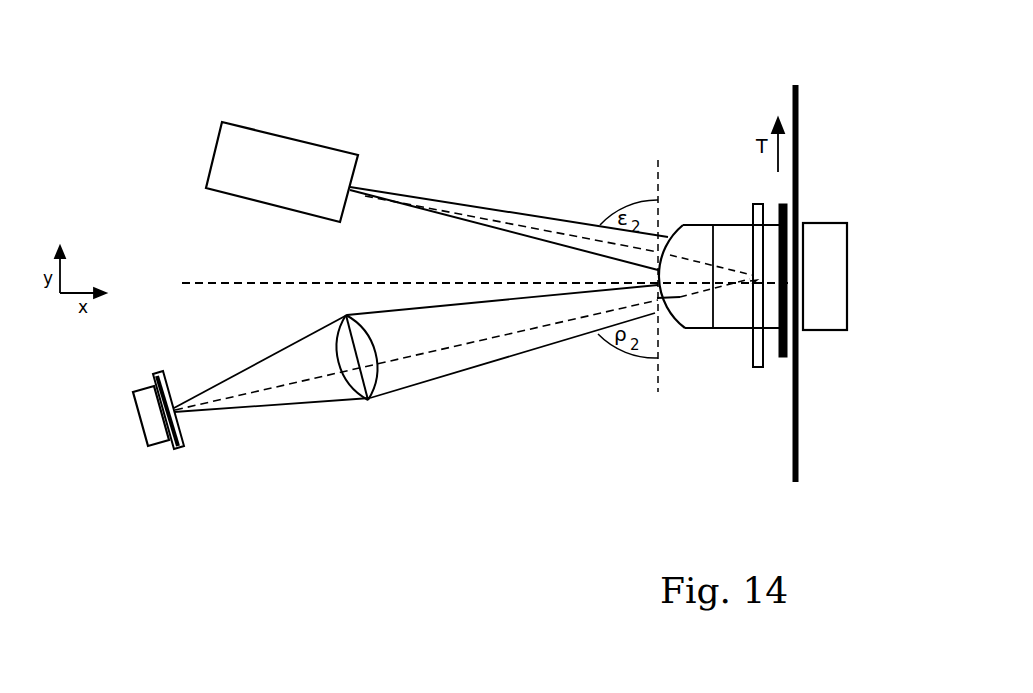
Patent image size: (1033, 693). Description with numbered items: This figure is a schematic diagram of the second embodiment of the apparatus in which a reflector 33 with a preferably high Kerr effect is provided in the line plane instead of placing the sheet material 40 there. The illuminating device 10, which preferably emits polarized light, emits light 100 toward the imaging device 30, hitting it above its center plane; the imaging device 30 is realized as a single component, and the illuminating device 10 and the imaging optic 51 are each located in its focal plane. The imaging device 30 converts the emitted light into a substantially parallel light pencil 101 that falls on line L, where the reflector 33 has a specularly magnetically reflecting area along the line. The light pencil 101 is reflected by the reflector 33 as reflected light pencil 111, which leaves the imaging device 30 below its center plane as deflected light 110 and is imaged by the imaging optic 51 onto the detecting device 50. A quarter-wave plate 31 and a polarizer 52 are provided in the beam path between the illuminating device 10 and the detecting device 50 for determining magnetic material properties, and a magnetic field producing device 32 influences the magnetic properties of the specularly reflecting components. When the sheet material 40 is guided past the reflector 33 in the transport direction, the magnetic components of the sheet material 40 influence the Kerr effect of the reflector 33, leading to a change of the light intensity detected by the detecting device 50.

The illuminating device 10 is at (252, 150).
The emitted light 100 is at (447, 203).
The imaging device 30 is at (690, 243).
The light pencil 101 is at (730, 272).
The reflected light 111 is at (686, 300).
The quarter-wave plate 31 is at (757, 368).
The reflector 33 is at (781, 360).
The sheet material 40 is at (797, 142).
The magnetic field producing device 32 is at (823, 305).
The deflected light 110 is at (512, 358).
The imaging optic 51 is at (352, 370).
The detecting device 50 is at (157, 430).
The polarizer 52 is at (175, 448).